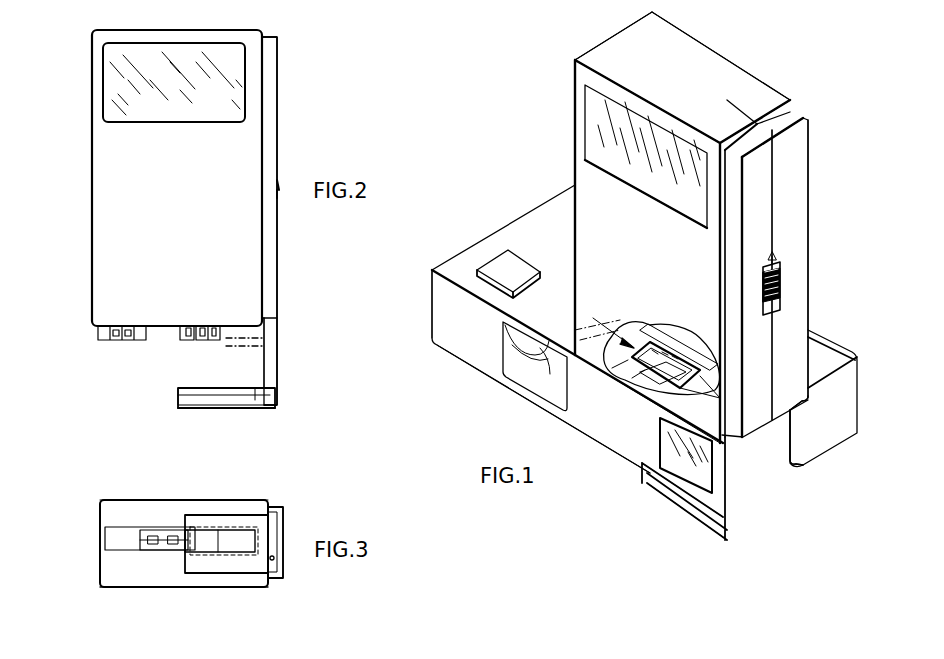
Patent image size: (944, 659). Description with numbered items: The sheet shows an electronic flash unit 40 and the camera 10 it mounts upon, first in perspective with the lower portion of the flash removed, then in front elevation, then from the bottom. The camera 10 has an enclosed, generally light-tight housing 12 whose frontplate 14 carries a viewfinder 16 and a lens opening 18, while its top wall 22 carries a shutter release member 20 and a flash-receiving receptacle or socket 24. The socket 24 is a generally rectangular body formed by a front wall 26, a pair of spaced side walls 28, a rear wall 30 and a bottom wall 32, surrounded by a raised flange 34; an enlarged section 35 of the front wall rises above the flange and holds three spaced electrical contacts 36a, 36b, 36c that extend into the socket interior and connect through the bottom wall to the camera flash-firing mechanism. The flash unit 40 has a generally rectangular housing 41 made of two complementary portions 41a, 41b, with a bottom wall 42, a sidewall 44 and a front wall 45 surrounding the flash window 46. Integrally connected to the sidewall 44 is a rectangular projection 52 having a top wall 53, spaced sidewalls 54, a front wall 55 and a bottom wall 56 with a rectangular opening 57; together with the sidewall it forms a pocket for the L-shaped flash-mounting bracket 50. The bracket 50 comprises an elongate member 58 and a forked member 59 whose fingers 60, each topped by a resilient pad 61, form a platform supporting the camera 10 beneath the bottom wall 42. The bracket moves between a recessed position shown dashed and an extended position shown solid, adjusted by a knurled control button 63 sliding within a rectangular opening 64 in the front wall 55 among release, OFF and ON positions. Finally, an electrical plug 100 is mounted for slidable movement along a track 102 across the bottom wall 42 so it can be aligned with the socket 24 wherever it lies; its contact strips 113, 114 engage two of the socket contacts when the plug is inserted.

In FIG. 1, the camera 10 is at (456, 372).
In FIG. 1, the housing 12 is at (448, 306).
In FIG. 1, the frontplate 14 is at (561, 412).
In FIG. 1, the viewfinder 16 is at (670, 450).
In FIG. 1, the lens opening 18 is at (512, 378).
In FIG. 1, the shutter release member 20 is at (498, 262).
In FIG. 1, the top wall 22 is at (825, 362).
In FIG. 1, the flash-receiving receptacle or socket 24 is at (600, 320).
In FIG. 1, the front wall 26 is at (672, 380).
In FIG. 1, the side walls 28 is at (646, 346).
In FIG. 1, the rear wall 30 is at (668, 362).
In FIG. 1, the bottom wall 32 is at (666, 376).
In FIG. 1, the raised flange 34 is at (626, 366).
In FIG. 1, the enlarged section 35 is at (644, 376).
In FIG. 1, the electrical contact 36a is at (660, 356).
In FIG. 1, the electrical contact 36b is at (670, 358).
In FIG. 1, the electrical contact 36c is at (678, 362).
In FIG. 2, the flash unit 40 is at (90, 190).
In FIG. 1, the flash unit 40 is at (726, 40).
In FIG. 3, the housing 41 is at (98, 500).
In FIG. 1, the housing 41 is at (572, 152).
In FIG. 3, the housing portion 41a is at (135, 505).
In FIG. 1, the housing portion 41a is at (612, 48).
In FIG. 3, the housing portion 41b is at (106, 584).
In FIG. 1, the housing portion 41b is at (680, 32).
In FIG. 3, the bottom wall 42 is at (150, 590).
In FIG. 1, the sidewall 44 is at (790, 100).
In FIG. 1, the front wall 45 is at (584, 222).
In FIG. 2, the flash window 46 is at (118, 90).
In FIG. 1, the flash window 46 is at (600, 122).
In FIG. 2, the flash-mounting bracket 50 is at (276, 384).
In FIG. 3, the flash-mounting bracket 50 is at (282, 584).
In FIG. 1, the flash-mounting bracket 50 is at (766, 522).
In FIG. 2, the projection 52 is at (278, 96).
In FIG. 1, the projection 52 is at (792, 178).
In FIG. 1, the top wall 53 is at (780, 110).
In FIG. 2, the sidewalls 54 is at (278, 68).
In FIG. 3, the sidewalls 54 is at (276, 504).
In FIG. 1, the sidewalls 54 is at (726, 372).
In FIG. 1, the front wall 55 is at (790, 212).
In FIG. 3, the bottom wall 56 is at (275, 530).
In FIG. 1, the bottom wall 56 is at (804, 404).
In FIG. 3, the opening 57 is at (276, 560).
In FIG. 2, the elongate member 58 is at (278, 336).
In FIG. 3, the elongate member 58 is at (268, 540).
In FIG. 1, the elongate member 58 is at (790, 462).
In FIG. 2, the forked member 59 is at (228, 408).
In FIG. 3, the forked member 59 is at (246, 570).
In FIG. 1, the forked member 59 is at (715, 518).
In FIG. 2, the finger 60 is at (188, 400).
In FIG. 3, the finger 60 is at (212, 522).
In FIG. 1, the finger 60 is at (670, 500).
In FIG. 2, the resilient pad 61 is at (180, 394).
In FIG. 1, the resilient pad 61 is at (660, 480).
In FIG. 2, the control button 63 is at (278, 195).
In FIG. 1, the control button 63 is at (790, 286).
In FIG. 1, the opening 64 is at (776, 258).
In FIG. 2, the electrical plug 100 is at (98, 334).
In FIG. 3, the electrical plug 100 is at (142, 528).
In FIG. 3, the track 102 is at (125, 542).
In FIG. 2, the electrical contact strip 113 is at (187, 344).
In FIG. 2, the electrical contact strip 114 is at (214, 344).